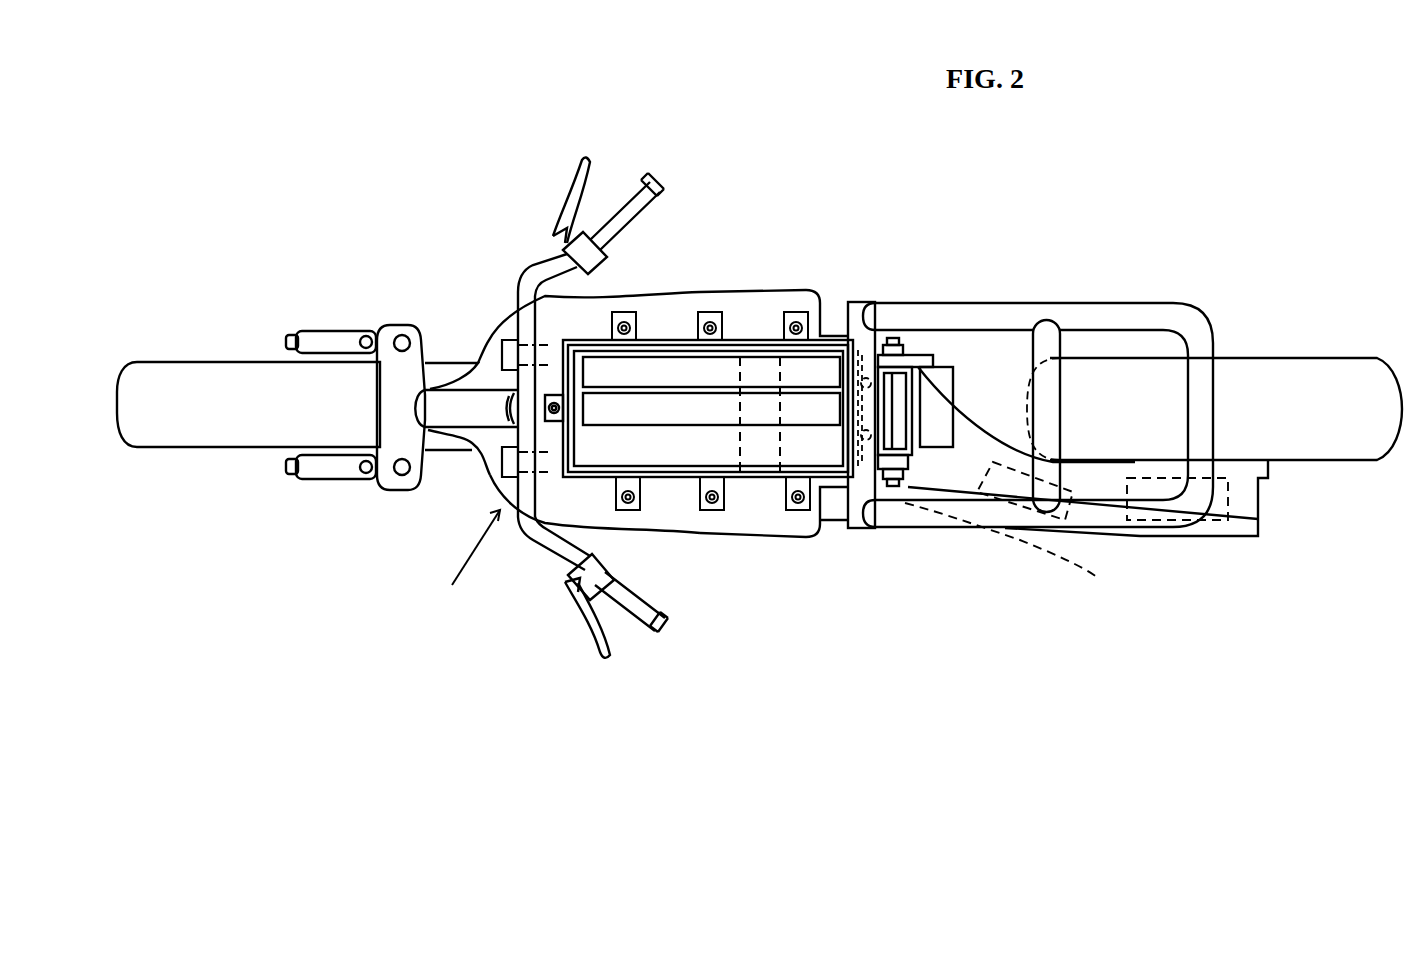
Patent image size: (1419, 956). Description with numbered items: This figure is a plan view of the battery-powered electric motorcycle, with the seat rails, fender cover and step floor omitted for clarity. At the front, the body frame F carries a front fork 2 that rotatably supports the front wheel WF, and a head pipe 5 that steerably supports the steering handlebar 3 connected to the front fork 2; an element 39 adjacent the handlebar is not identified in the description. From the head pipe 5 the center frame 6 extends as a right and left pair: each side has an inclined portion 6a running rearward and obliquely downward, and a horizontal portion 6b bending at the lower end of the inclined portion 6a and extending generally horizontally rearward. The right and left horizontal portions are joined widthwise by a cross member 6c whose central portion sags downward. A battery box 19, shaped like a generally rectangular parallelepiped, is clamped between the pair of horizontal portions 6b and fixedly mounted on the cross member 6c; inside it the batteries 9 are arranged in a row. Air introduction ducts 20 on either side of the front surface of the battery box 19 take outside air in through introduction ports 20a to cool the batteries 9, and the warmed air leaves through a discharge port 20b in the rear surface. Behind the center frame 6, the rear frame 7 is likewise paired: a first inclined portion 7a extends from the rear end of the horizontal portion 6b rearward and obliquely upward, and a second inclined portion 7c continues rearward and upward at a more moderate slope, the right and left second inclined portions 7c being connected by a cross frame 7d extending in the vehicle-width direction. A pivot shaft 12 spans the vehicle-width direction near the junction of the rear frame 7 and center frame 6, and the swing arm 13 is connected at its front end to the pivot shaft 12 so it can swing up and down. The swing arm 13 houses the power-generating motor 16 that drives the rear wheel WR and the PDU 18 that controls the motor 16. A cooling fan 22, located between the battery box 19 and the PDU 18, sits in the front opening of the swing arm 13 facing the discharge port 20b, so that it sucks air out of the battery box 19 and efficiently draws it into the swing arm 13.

The front fork 2 is at (338, 342).
The steering handlebar 3 is at (643, 192).
The head pipe 5 is at (453, 400).
The center frame 6 is at (512, 500).
The inclined portion 6a is at (495, 438).
The horizontal portion 6b is at (752, 302).
The cross member 6c is at (763, 447).
The rear frame 7 is at (1023, 313).
The first inclined portion 7a is at (832, 313).
The second inclined portion 7c is at (962, 316).
The cross frame 7d is at (1063, 340).
The batteries 9 is at (643, 370).
The pivot shaft 12 is at (912, 455).
The swing arm 13 is at (1200, 536).
The power-generating motor 16 is at (1228, 497).
The PDU 18 is at (1015, 554).
The battery box 19 is at (688, 485).
The air introduction ducts 20 is at (545, 330).
The introduction ports 20a is at (502, 350).
The discharge port 20b is at (893, 340).
The cooling fan 22 is at (937, 432).
The brake lever 39 is at (592, 168).
The body frame F is at (467, 563).
The front wheel WF is at (203, 377).
The rear wheel WR is at (1297, 370).